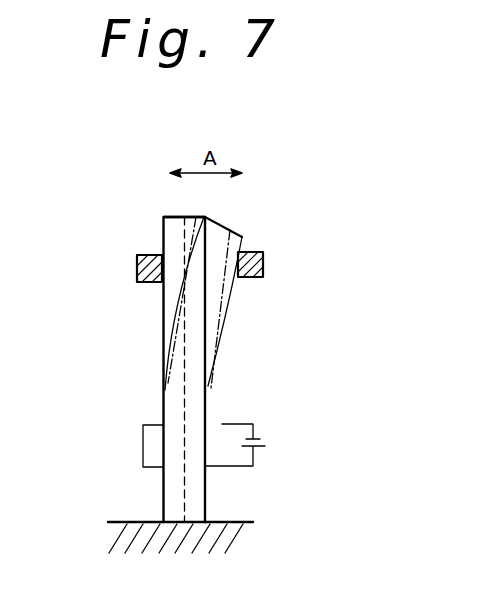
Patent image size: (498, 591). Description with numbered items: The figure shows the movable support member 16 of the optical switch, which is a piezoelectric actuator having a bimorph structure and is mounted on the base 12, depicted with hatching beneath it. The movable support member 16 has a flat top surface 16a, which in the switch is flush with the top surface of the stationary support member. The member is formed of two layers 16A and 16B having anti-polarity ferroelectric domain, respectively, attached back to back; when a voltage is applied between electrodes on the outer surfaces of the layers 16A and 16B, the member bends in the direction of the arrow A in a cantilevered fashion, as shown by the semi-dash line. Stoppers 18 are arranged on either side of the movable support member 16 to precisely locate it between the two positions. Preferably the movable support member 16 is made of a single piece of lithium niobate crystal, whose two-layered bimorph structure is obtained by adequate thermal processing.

The base 12 is at (233, 534).
The movable support member 16 is at (170, 230).
The top surface 16a is at (173, 216).
The layer 16A is at (167, 288).
The layer 16B is at (203, 302).
The stopper 18 is at (137, 267).